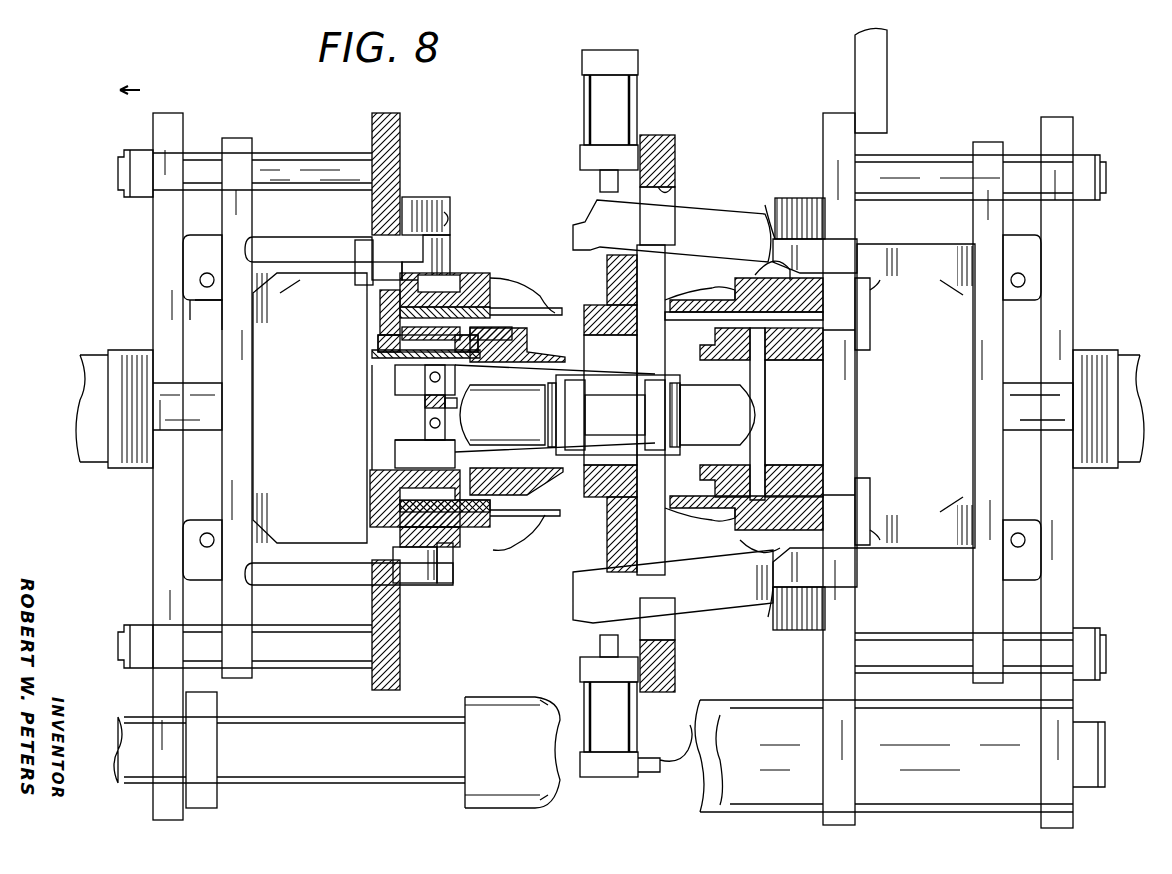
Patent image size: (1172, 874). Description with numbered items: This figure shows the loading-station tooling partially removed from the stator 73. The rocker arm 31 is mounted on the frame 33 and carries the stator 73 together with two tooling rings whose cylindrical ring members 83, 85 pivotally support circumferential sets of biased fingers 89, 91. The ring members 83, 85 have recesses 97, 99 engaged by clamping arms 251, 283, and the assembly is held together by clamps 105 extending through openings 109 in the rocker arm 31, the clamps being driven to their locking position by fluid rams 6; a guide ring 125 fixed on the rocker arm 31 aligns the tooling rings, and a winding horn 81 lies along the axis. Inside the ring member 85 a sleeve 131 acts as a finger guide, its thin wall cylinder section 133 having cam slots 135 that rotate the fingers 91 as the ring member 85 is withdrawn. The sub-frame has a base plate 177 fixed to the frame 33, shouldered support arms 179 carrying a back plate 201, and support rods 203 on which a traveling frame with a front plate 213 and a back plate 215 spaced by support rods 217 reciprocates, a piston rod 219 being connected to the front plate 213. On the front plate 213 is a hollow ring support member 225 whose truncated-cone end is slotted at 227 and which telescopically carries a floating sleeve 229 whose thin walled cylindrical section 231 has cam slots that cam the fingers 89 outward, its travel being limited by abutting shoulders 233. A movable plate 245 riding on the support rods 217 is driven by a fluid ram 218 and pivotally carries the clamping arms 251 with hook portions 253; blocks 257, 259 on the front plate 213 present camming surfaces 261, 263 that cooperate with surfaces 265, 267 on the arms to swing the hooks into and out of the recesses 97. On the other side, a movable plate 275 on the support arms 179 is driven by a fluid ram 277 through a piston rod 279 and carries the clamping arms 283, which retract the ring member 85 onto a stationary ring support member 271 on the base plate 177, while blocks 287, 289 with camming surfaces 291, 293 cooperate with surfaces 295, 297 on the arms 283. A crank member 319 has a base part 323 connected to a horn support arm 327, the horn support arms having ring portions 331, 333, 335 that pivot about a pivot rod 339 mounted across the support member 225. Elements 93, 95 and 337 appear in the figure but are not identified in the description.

The fluid ram 6 is at (640, 98).
The rocker arm 31 is at (672, 145).
The frame 33 is at (890, 52).
The stator 73 is at (595, 520).
The winding horn 81 is at (618, 415).
The ring member 83 is at (492, 292).
The ring member 85 is at (775, 350).
The fingers 89 is at (515, 545).
The fingers 91 is at (700, 409).
The jaw plate 93 is at (480, 560).
The spring 95 is at (735, 558).
The recesses 97 is at (445, 285).
The recesses 99 is at (823, 290).
The clamps 105 is at (700, 230).
The openings 109 is at (675, 195).
The guide ring 125 is at (612, 556).
The sleeve 131 is at (745, 340).
The thin wall cylinder section 133 is at (690, 318).
The cam slots 135 is at (668, 300).
The base plate 177 is at (830, 682).
The support arms 179 is at (945, 150).
The back plate 201 is at (1058, 125).
The support rods 203 is at (262, 765).
The front plate 213 is at (400, 650).
The back plate 215 is at (160, 562).
The support rods 217 is at (312, 155).
The fluid ram 218 is at (74, 416).
The piston rod 219 is at (210, 412).
The ring support member 225 is at (370, 475).
The slots 227 is at (525, 350).
The sleeve 229 is at (370, 515).
The thin walled cylindrical section 231 is at (528, 508).
The abutting shoulders 233 is at (415, 565).
The movable plate 245 is at (230, 320).
The clamping arms 251 is at (300, 248).
The hook portions 253 is at (452, 262).
The block 257 is at (358, 312).
The block 259 is at (420, 210).
The camming surface 261 is at (358, 285).
The camming surface 263 is at (450, 226).
The cooperating surface 265 is at (284, 293).
The cooperating surface 267 is at (356, 240).
The stationary ring support member 271 is at (800, 475).
The movable plate 275 is at (990, 462).
The fluid ram 277 is at (1130, 362).
The piston rod 279 is at (1020, 412).
The clamping arms 283 is at (880, 252).
The block 287 is at (803, 210).
The block 289 is at (870, 335).
The camming surface 291 is at (773, 225).
The camming surface 293 is at (893, 410).
The camming surface 295 is at (858, 248).
The camming surface 297 is at (965, 290).
The crank member 319 is at (470, 395).
The base part 323 is at (425, 380).
The horn support arm 327 is at (470, 430).
The ring portion 331 is at (425, 396).
The ring portion 333 is at (395, 452).
The ring portion 335 is at (375, 355).
The pin 337 is at (445, 410).
The pivot rod 339 is at (370, 492).